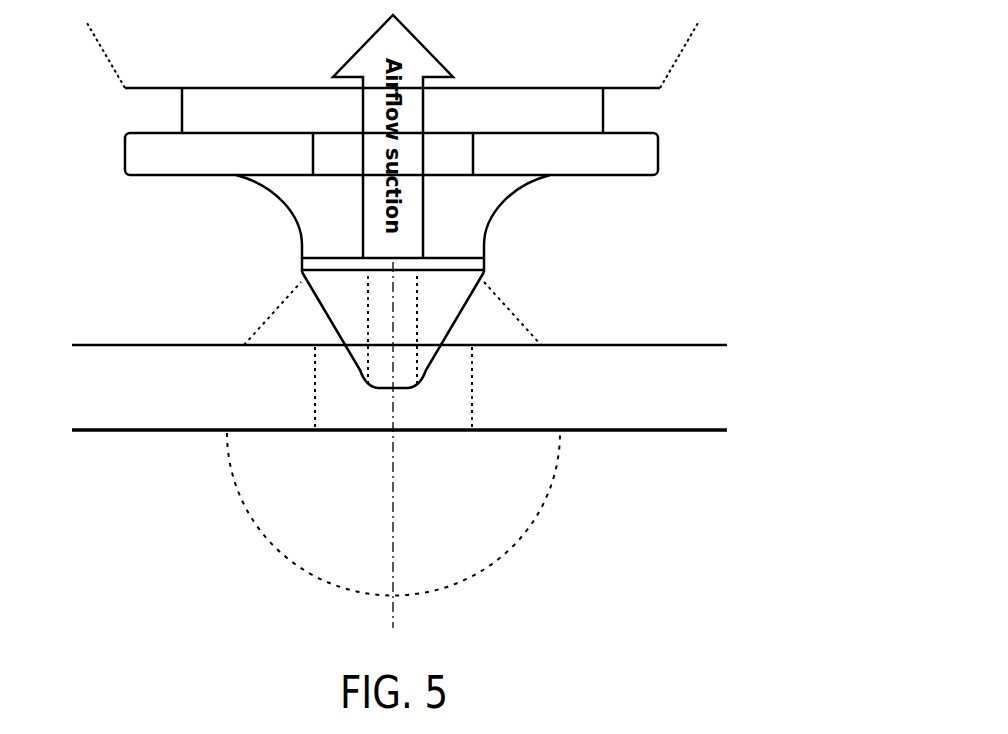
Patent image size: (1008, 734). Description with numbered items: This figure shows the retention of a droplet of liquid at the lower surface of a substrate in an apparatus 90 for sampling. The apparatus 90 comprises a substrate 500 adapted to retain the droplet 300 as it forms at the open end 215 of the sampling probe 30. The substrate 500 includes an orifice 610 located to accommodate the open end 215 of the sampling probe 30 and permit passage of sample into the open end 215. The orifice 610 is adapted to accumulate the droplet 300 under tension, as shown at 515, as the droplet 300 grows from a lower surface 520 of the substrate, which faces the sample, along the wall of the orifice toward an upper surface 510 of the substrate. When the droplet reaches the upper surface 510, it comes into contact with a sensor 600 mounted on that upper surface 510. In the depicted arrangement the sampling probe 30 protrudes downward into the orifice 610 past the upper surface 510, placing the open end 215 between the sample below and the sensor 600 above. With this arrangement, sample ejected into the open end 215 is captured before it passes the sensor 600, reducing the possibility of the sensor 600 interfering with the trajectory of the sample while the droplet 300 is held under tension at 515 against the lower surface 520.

The sampling probe 30 is at (665, 82).
The sensor 600 is at (168, 145).
The open end 215 is at (327, 320).
The droplet 300 is at (510, 310).
The apparatus 90 is at (108, 322).
The upper surface 510 is at (533, 343).
The substrate 500 is at (708, 398).
The lower surface 520 is at (167, 438).
The orifice 610 is at (347, 437).
The droplet under tension 515 is at (553, 473).